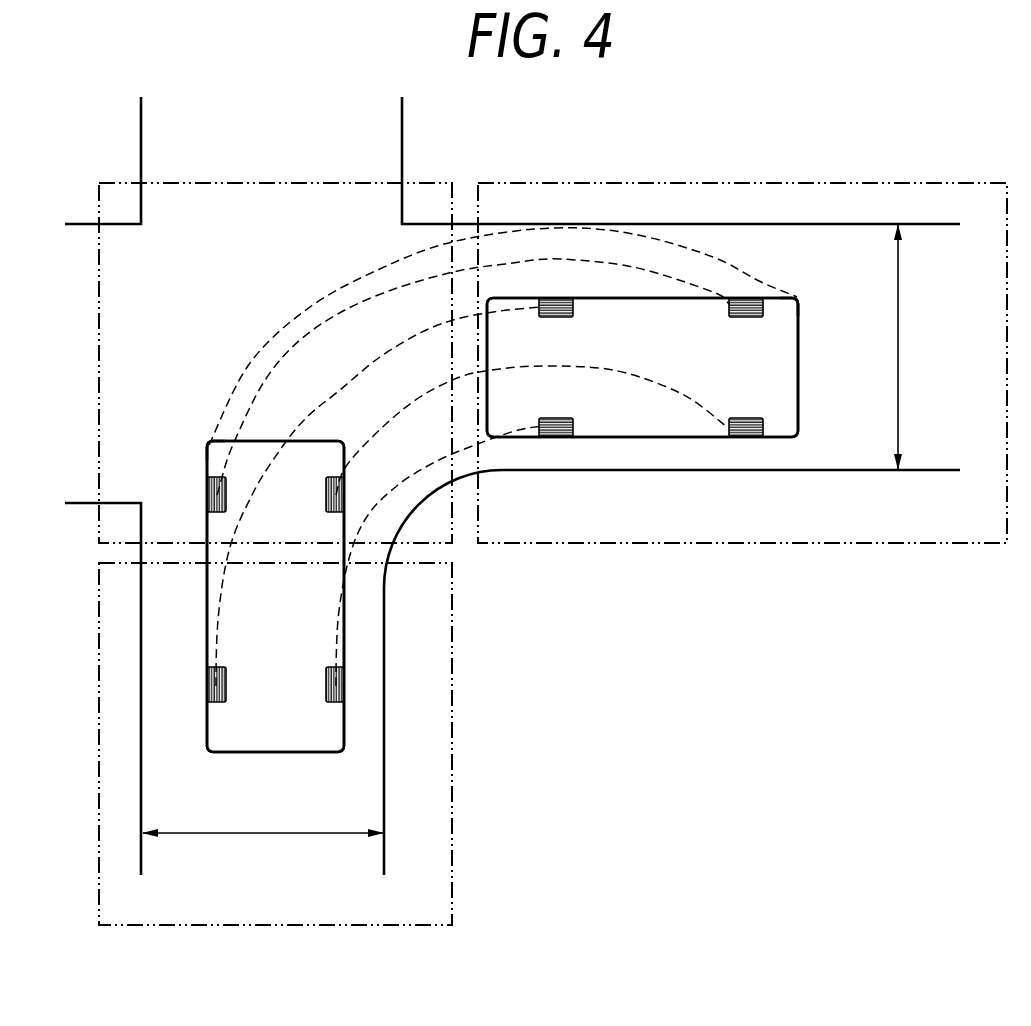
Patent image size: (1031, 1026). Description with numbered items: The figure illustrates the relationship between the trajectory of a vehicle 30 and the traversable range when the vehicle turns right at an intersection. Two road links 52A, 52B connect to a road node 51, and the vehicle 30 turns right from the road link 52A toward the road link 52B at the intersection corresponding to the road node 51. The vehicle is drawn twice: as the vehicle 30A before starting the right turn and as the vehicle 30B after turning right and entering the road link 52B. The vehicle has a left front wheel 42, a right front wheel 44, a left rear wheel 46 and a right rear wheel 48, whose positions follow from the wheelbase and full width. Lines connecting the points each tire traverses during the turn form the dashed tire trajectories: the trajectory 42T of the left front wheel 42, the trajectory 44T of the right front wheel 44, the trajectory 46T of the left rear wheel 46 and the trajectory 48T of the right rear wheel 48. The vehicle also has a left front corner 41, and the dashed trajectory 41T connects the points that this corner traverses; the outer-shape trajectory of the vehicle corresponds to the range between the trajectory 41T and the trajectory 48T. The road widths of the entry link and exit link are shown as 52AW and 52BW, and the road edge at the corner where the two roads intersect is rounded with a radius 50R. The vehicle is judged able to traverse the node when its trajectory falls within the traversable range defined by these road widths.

The vehicle 30 is at (502, 525).
The vehicle prior to starting the right turn 30A is at (273, 752).
The vehicle after turning right 30B is at (790, 380).
The left front corner 41 is at (207, 442).
The trajectory of the left front corner 41T is at (335, 300).
The left front wheel 42 is at (215, 495).
The trajectory of the left front wheel 42T is at (390, 298).
The right front wheel 44 is at (335, 493).
The trajectory of the right front wheel 44T is at (615, 370).
The left rear wheel 46 is at (215, 686).
The trajectory of the left rear wheel 46T is at (390, 353).
The right rear wheel 48 is at (335, 686).
The trajectory of the right rear wheel 48T is at (433, 463).
The radius of the rounded shape 50R is at (425, 511).
The road node 51 is at (268, 183).
The road link 52A is at (452, 735).
The road link 52B is at (741, 183).
The road width of the entry link 52AW is at (255, 833).
The road width of the exit link 52BW is at (898, 355).